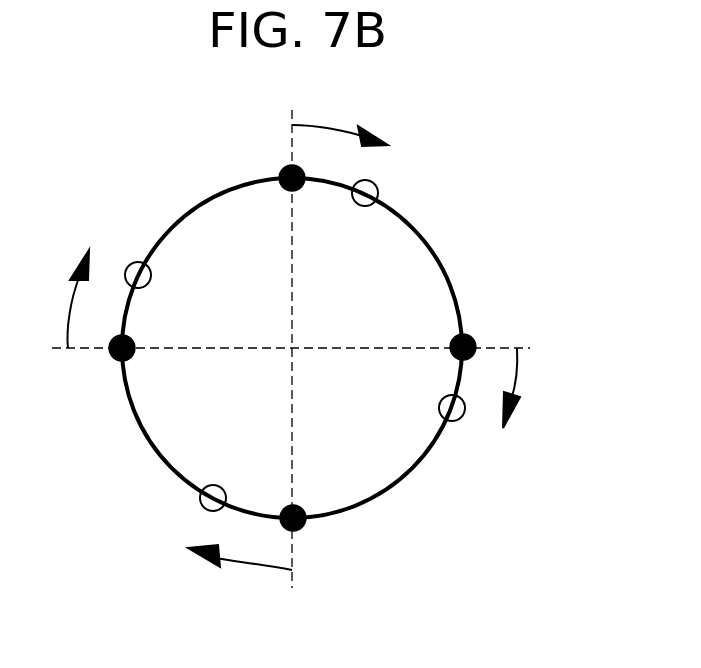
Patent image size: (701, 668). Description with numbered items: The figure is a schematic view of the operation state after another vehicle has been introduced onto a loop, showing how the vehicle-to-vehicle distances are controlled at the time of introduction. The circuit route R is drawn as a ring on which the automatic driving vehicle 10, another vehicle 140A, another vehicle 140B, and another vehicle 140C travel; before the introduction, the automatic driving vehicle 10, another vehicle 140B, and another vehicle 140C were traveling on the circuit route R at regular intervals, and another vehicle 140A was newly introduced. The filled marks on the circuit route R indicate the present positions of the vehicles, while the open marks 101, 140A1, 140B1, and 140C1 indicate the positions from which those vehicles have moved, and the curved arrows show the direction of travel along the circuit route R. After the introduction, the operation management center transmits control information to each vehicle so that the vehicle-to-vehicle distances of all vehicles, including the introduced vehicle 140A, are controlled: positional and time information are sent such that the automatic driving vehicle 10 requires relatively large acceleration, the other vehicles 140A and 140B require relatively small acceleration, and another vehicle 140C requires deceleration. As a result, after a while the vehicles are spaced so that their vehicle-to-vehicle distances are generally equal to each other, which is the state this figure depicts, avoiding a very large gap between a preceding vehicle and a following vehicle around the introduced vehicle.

The automatic driving vehicle 10 is at (283, 165).
The circuit route R is at (143, 437).
The reference position 101 is at (378, 190).
The another vehicle 140A is at (112, 358).
The first element moved position 140A1 is at (131, 266).
The another vehicle 140B is at (475, 333).
The second element moved position 140B1 is at (464, 418).
The another vehicle 140C is at (303, 528).
The third element moved position 140C1 is at (200, 507).